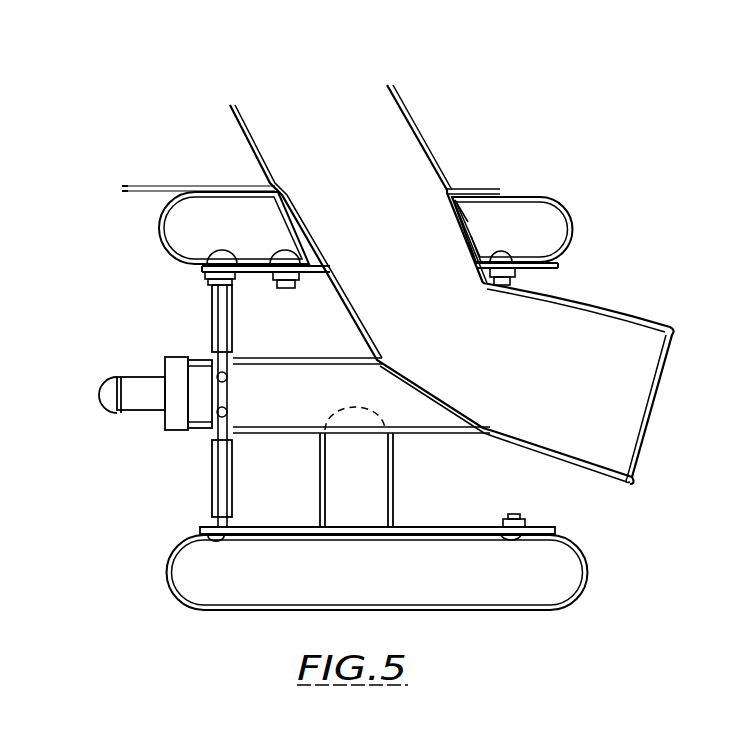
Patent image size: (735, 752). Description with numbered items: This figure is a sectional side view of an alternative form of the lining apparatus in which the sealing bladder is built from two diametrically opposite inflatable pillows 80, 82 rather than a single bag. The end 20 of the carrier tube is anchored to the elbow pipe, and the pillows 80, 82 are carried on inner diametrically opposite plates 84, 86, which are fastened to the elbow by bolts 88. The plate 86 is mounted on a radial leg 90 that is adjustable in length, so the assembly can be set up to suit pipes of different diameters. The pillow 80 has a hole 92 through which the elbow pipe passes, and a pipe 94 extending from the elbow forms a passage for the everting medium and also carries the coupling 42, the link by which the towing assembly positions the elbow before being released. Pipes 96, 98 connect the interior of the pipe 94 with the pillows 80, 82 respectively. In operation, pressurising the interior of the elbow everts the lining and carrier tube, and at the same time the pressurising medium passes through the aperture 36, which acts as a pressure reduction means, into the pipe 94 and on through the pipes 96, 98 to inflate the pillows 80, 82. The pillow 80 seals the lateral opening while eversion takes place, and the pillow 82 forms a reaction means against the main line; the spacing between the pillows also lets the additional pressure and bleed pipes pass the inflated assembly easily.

The end of carrier tube 20 is at (402, 162).
The aperture 36 is at (432, 388).
The link 42 is at (173, 372).
The inflatable pillow 80 is at (631, 317).
The inflatable pillow 82 is at (590, 570).
The inner plate 84 is at (310, 273).
The inner plate 86 is at (273, 528).
The bolts 88 is at (517, 278).
The radial leg 90 is at (395, 505).
The hole 92 is at (477, 240).
The pipe 94 is at (438, 433).
The pipe 96 is at (210, 302).
The pipe 98 is at (208, 485).